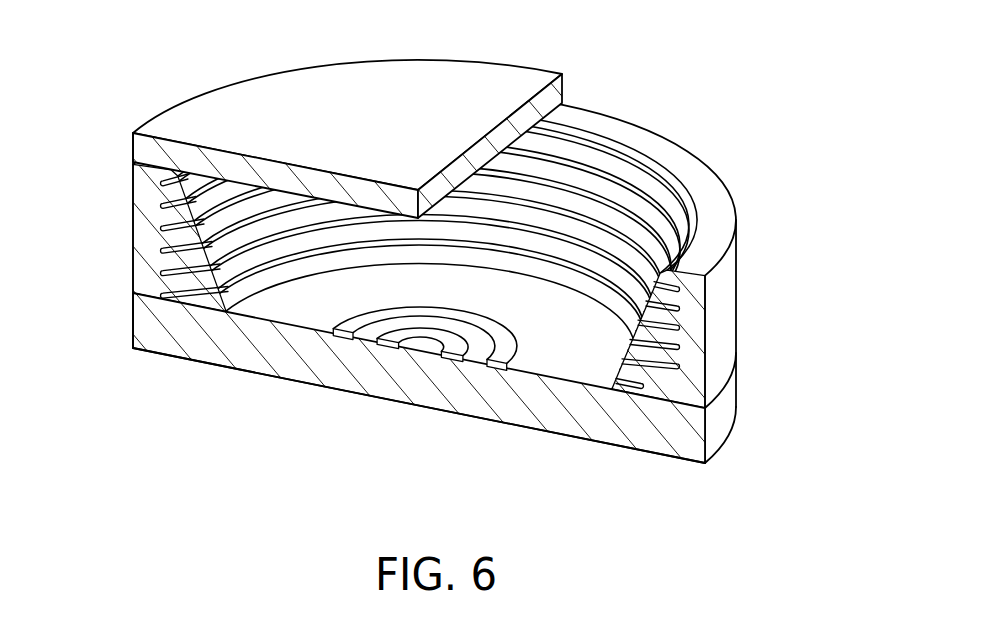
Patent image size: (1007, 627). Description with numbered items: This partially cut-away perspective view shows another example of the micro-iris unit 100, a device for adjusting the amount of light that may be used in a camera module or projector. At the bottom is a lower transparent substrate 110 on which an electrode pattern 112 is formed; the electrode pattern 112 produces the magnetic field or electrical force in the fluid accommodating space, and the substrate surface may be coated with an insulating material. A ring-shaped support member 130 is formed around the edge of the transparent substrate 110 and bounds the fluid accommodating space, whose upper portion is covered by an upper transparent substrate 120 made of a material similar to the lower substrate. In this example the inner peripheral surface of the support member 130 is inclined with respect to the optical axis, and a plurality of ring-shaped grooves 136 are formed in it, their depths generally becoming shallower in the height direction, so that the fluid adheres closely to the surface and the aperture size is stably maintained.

The micro-iris unit 100 is at (652, 88).
The transparent substrate 110 is at (605, 425).
The electrode pattern 112 is at (477, 360).
The transparent substrate 120 is at (150, 156).
The support member 130 is at (693, 336).
The grooves 136 is at (168, 291).